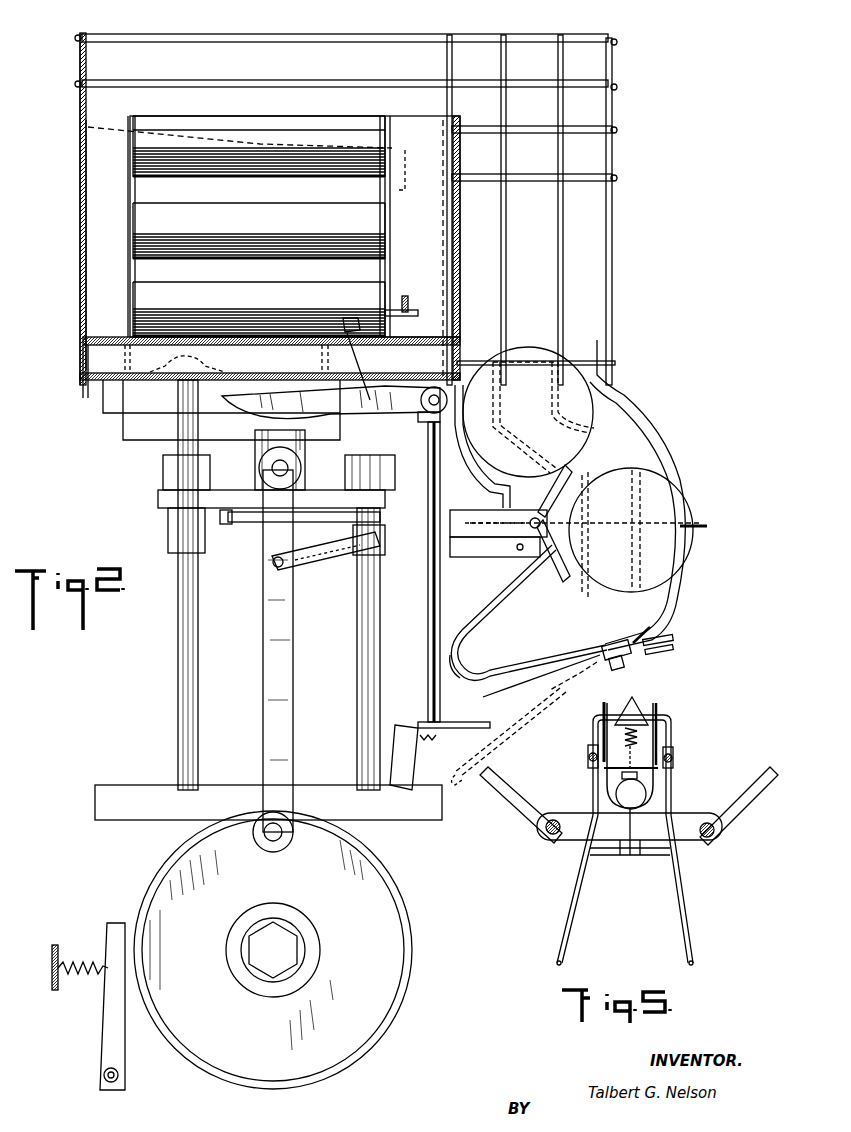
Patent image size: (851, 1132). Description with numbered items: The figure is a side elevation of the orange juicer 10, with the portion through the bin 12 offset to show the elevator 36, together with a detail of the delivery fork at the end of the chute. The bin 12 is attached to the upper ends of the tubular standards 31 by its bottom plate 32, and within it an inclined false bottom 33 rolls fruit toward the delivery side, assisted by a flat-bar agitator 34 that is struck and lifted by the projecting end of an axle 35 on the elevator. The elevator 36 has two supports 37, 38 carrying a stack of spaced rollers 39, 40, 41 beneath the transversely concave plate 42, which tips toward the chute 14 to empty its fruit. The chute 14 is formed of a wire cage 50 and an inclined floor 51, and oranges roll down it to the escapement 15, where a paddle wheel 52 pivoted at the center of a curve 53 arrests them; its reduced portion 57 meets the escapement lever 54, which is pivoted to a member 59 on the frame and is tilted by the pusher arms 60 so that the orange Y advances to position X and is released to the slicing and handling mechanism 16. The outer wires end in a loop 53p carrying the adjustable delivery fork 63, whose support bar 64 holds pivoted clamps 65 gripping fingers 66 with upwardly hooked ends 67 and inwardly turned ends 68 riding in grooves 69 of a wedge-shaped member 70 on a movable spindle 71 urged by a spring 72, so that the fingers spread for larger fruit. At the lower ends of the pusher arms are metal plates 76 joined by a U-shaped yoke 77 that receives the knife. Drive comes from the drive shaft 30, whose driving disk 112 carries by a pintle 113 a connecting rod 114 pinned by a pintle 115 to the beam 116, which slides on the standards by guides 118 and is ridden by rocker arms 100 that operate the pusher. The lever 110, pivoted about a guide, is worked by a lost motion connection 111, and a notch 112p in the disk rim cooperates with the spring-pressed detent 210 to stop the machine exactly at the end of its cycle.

In FIG. 2, the orange juicer 10 is at (78, 214).
In FIG. 2, the bin 12 is at (80, 246).
In FIG. 2, the chute 14 is at (280, 36).
In FIG. 2, the escapement 15 is at (542, 566).
In FIG. 2, the slicing and handling mechanism 16 is at (404, 707).
In FIG. 2, the drive shaft 30 is at (278, 945).
In FIG. 2, the standards 31 is at (360, 590).
In FIG. 2, the bottom plate 32 is at (145, 380).
In FIG. 2, the inclined false bottom 33 is at (90, 322).
In FIG. 2, the agitator 34 is at (408, 300).
In FIG. 2, the axle 35 is at (400, 316).
In FIG. 2, the elevator 36 is at (124, 191).
In FIG. 2, the support 37 is at (128, 272).
In FIG. 2, the support 38 is at (390, 262).
In FIG. 2, the roller 39 is at (150, 298).
In FIG. 2, the roller 40 is at (160, 220).
In FIG. 2, the roller 41 is at (133, 158).
In FIG. 2, the transversely concave plate 42 is at (215, 118).
In FIG. 2, the wire cage 50 is at (360, 38).
In FIG. 2, the inclined floor 51 is at (411, 179).
In FIG. 2, the paddle wheel 52 is at (545, 493).
In FIG. 2, the curve 53 is at (668, 440).
In FIG. 5, the curve 53 is at (670, 704).
In FIG. 2, the loop 53p is at (558, 683).
In FIG. 5, the loop 53p is at (635, 850).
In FIG. 2, the escapement lever 54 is at (436, 472).
In FIG. 2, the reduced portion 57 is at (560, 512).
In FIG. 2, the member 59 is at (470, 547).
In FIG. 2, the pusher arms 60 is at (440, 605).
In FIG. 2, the adjustable delivery fork 63 is at (622, 642).
In FIG. 5, the adjustable delivery fork 63 is at (685, 754).
In FIG. 2, the support bar 64 is at (625, 663).
In FIG. 5, the support bar 64 is at (645, 758).
In FIG. 5, the pivoted clamps 65 is at (586, 753).
In FIG. 2, the fingers 66 is at (520, 690).
In FIG. 5, the fingers 66 is at (680, 890).
In FIG. 2, the upwardly hooked ends 67 is at (468, 660).
In FIG. 5, the upwardly hooked ends 67 is at (690, 964).
In FIG. 2, the inwardly turned ends 68 is at (620, 668).
In FIG. 5, the inwardly turned ends 68 is at (612, 705).
In FIG. 2, the grooves 69 is at (672, 640).
In FIG. 5, the grooves 69 is at (656, 705).
In FIG. 2, the wedge-shaped member 70 is at (672, 650).
In FIG. 5, the wedge-shaped member 70 is at (630, 700).
In FIG. 5, the movable spindle 71 is at (622, 775).
In FIG. 5, the spring 72 is at (625, 735).
In FIG. 5, the metal plates 76 is at (568, 830).
In FIG. 5, the U-shaped yoke 77 is at (620, 795).
In FIG. 2, the rocker arms 100 is at (331, 402).
In FIG. 2, the lever 110 is at (300, 516).
In FIG. 2, the lost motion connection 111 is at (275, 566).
In FIG. 2, the driving disk 112 is at (375, 885).
In FIG. 2, the notch 112p is at (250, 815).
In FIG. 2, the pintle 113 is at (275, 838).
In FIG. 2, the connecting rod 114 is at (285, 660).
In FIG. 2, the pintle 115 is at (274, 468).
In FIG. 2, the beam 116 is at (300, 450).
In FIG. 2, the guide 118 is at (386, 472).
In FIG. 2, the spring pressed cam faced detent 210 is at (110, 1020).
In FIG. 2, the orange in released position X is at (655, 505).
In FIG. 2, the orange in waiting position Y is at (565, 390).